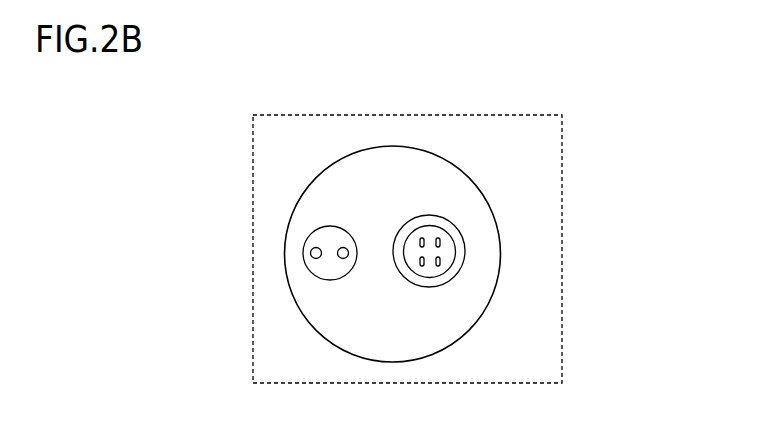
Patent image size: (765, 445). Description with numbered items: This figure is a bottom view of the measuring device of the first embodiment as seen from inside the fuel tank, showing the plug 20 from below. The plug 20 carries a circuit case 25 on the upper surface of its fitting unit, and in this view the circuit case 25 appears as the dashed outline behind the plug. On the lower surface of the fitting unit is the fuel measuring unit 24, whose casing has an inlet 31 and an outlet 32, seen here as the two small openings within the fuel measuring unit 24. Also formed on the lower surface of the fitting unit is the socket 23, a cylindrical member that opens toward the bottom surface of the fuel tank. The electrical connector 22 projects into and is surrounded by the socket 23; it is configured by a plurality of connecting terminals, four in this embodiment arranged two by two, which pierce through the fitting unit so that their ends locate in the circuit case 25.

The plug 20 is at (470, 168).
The electrical connector 22 is at (424, 262).
The socket 23 is at (429, 214).
The fuel measuring unit 24 is at (318, 228).
The circuit case 25 is at (563, 347).
The inlet 31 is at (308, 256).
The outlet 32 is at (341, 258).